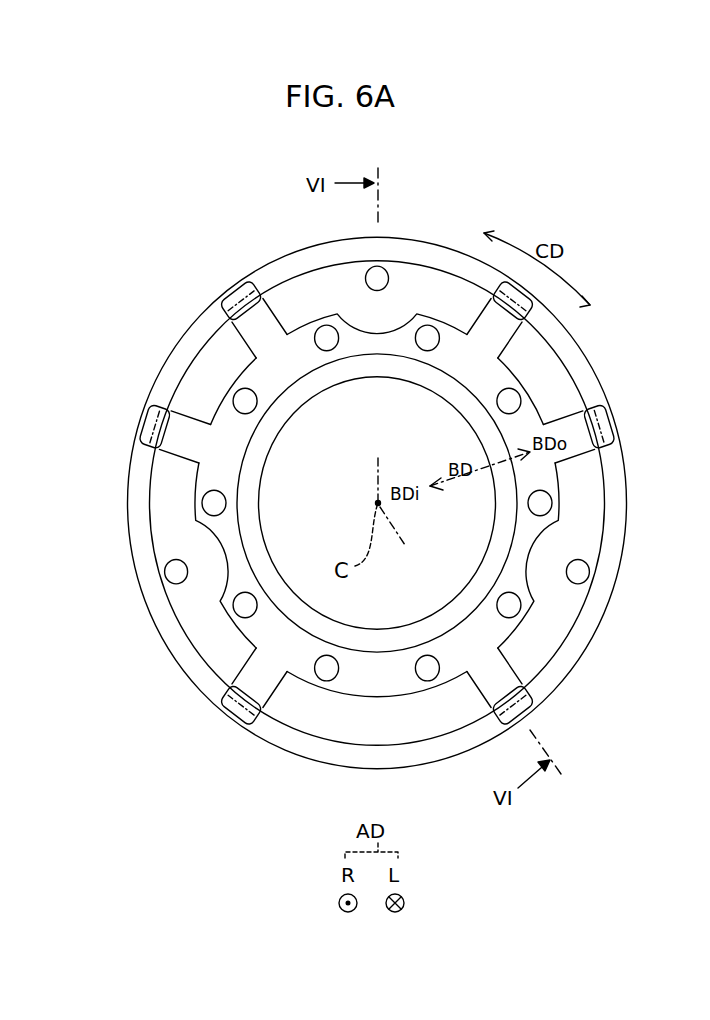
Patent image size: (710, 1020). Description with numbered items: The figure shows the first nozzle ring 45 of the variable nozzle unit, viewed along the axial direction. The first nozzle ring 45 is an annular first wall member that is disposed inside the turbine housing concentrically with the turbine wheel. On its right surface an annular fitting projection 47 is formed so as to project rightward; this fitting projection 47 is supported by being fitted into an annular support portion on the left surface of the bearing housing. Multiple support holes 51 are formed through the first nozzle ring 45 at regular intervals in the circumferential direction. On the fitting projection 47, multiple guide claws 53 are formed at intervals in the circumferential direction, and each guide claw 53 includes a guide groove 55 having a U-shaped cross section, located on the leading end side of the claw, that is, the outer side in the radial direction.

The first nozzle ring 45 is at (415, 207).
The fitting projection 47 is at (377, 697).
The support holes 51 is at (430, 343).
The guide claws 53 is at (240, 289).
The guide groove 55 is at (226, 300).